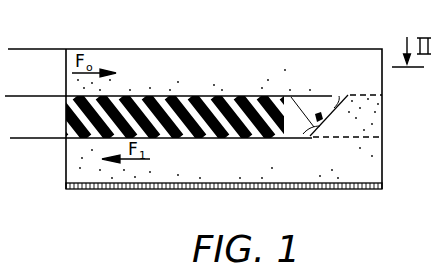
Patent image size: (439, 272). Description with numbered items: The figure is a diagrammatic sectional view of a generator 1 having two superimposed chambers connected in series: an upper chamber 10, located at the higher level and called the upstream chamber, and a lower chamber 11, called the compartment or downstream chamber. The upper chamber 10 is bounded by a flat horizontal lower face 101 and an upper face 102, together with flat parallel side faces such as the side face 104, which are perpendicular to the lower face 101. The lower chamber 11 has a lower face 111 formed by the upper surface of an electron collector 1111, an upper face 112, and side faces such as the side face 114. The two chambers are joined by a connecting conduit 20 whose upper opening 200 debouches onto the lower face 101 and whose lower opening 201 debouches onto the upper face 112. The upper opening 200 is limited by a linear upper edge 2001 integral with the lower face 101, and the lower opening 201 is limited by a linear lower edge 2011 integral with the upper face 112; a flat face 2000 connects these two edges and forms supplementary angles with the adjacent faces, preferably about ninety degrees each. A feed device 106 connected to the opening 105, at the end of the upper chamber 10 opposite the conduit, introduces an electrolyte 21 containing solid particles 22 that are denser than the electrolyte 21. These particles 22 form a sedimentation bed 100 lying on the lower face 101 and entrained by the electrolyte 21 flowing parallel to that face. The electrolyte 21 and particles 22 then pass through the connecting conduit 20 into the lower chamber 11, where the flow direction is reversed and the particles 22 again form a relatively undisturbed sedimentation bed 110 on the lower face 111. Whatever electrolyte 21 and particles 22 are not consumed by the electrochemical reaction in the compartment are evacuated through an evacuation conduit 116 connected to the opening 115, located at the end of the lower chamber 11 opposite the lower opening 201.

The generator 1 is at (315, 40).
The upper chamber 10 is at (209, 90).
The lower chamber 11 is at (202, 161).
The connecting conduit 20 is at (372, 106).
The electrolyte 21 is at (115, 60).
The solid particles 22 is at (283, 80).
The sedimentation bed 100 is at (165, 81).
The lower face 101 is at (100, 96).
The upper face 102 is at (243, 52).
The side face 104 is at (218, 62).
The opening 105 is at (63, 67).
The feed device 106 is at (22, 49).
The sedimentation bed 110 is at (256, 172).
The lower face 111 is at (147, 182).
The upper face 112 is at (210, 149).
The side face 114 is at (80, 135).
The opening 115 is at (67, 150).
The evacuation conduit 116 is at (24, 183).
The upper opening 200 is at (365, 92).
The lower opening 201 is at (345, 145).
The flat face 2000 is at (331, 116).
The upper edge 2001 is at (347, 95).
The lower edge 2011 is at (323, 143).
The electron collector 1111 is at (205, 190).